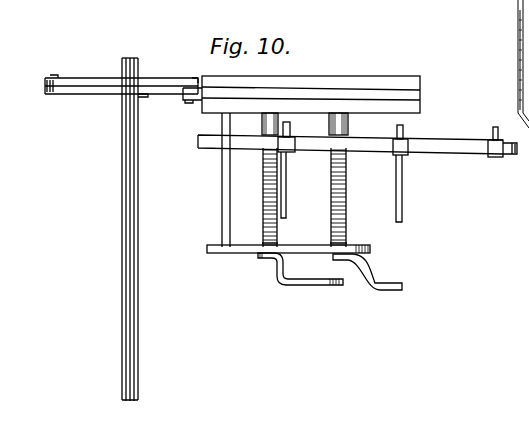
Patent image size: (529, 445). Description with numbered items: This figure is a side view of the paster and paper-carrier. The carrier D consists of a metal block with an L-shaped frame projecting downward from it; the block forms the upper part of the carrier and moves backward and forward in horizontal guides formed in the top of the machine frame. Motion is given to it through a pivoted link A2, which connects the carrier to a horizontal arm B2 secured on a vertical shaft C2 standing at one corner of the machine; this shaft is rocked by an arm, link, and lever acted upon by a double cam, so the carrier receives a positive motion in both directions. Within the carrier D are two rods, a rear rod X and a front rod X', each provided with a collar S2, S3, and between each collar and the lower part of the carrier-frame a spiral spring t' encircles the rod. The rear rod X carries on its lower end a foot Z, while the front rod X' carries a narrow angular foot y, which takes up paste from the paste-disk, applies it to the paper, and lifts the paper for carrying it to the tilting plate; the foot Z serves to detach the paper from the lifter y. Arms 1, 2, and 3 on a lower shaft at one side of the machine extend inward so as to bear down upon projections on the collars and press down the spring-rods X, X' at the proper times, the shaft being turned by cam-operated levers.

The pivoted link A2 is at (285, 83).
The horizontal arm B2 is at (105, 110).
The vertical shaft C2 is at (122, 250).
The collar S2 is at (259, 124).
The collar S3 is at (347, 124).
The rear rod X is at (261, 197).
The front rod X' is at (348, 197).
The spiral spring t' is at (303, 228).
The arm 1 is at (289, 169).
The arm 2 is at (405, 172).
The arm 3 is at (502, 140).
The carrier D is at (288, 241).
The foot Z is at (300, 269).
The narrow angular foot y is at (367, 272).